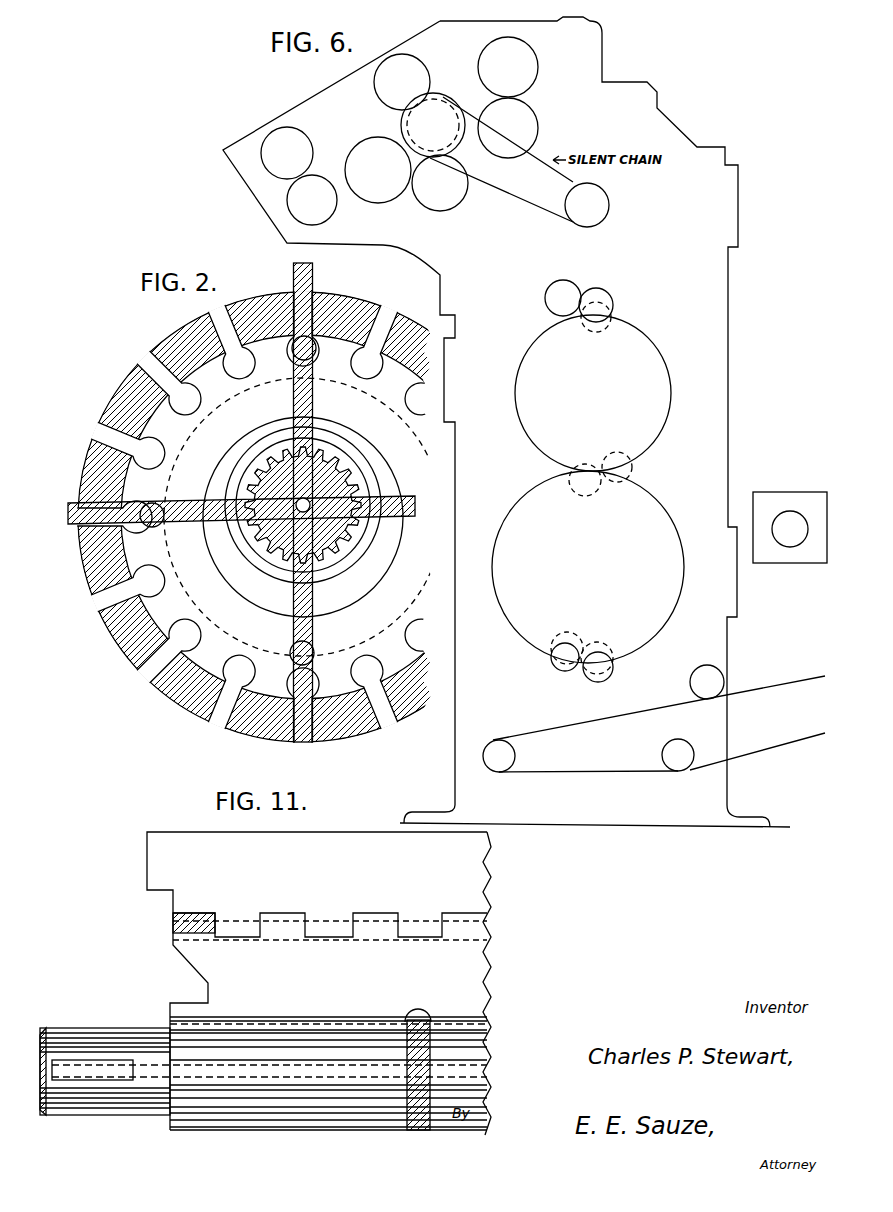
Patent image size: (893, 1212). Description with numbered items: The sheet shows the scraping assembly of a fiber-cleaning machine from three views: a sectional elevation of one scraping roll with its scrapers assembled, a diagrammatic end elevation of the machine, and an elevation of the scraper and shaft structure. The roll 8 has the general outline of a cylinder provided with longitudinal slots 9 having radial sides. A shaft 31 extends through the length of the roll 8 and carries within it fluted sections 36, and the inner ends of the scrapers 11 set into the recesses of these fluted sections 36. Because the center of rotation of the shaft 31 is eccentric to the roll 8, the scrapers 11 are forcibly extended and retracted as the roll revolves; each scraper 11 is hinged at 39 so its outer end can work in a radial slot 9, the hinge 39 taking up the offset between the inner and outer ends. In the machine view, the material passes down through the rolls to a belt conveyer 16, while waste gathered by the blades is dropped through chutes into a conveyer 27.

In FIG. 2, the scraper roll 8 is at (303, 517).
In FIG. 2, the slots 9 is at (158, 362).
In FIG. 2, the scraper 11 is at (74, 527).
In FIG. 11, the scraper 11 is at (330, 903).
In FIG. 6, the belt conveyer 16 is at (783, 690).
In FIG. 6, the conveyer 27 is at (781, 500).
In FIG. 11, the shaft 31 is at (88, 1030).
In FIG. 2, the fluted section 36 is at (324, 460).
In FIG. 11, the fluted section 36 is at (300, 1118).
In FIG. 2, the hinge 39 is at (157, 527).
In FIG. 11, the hinge 39 is at (228, 925).